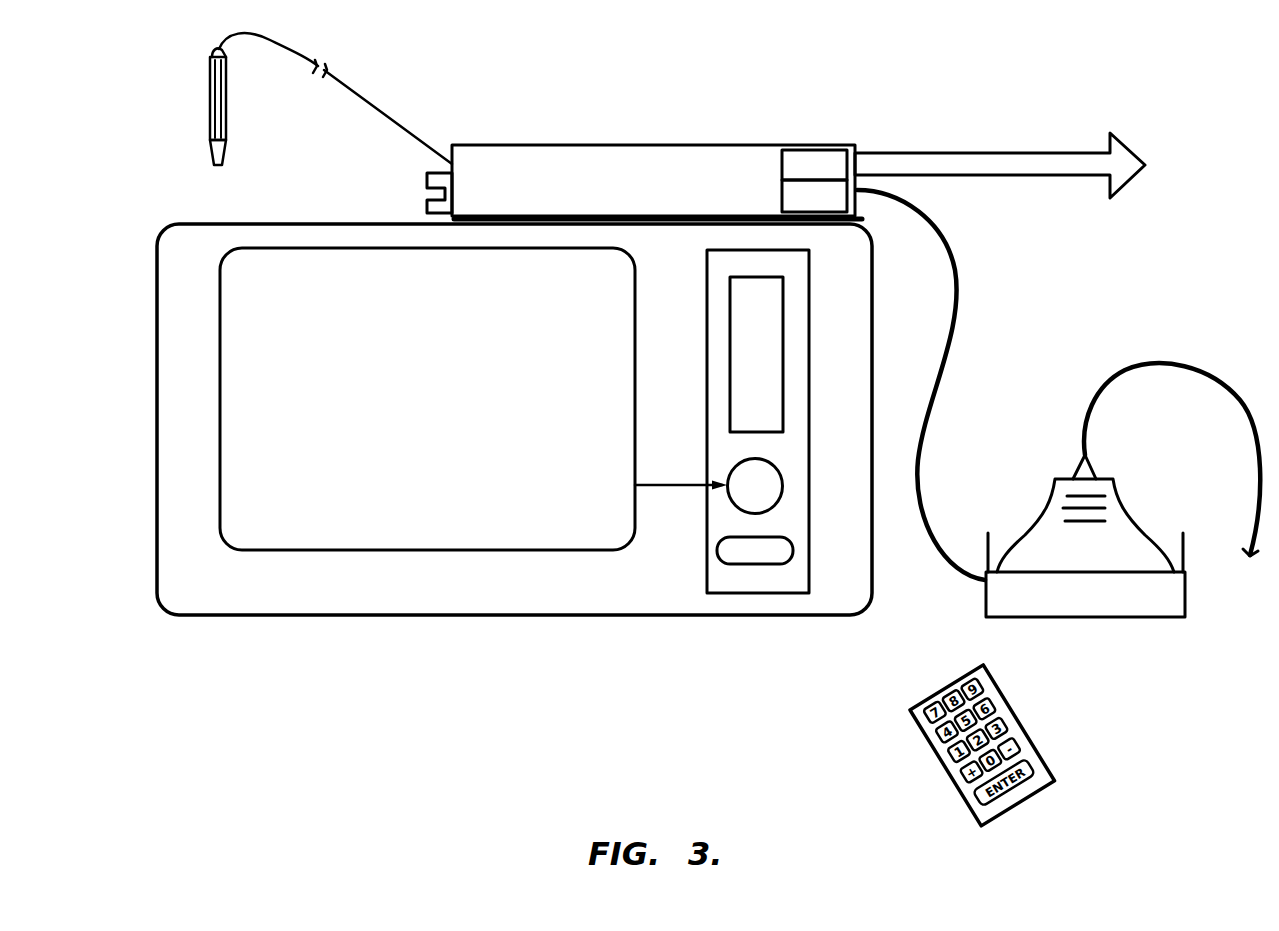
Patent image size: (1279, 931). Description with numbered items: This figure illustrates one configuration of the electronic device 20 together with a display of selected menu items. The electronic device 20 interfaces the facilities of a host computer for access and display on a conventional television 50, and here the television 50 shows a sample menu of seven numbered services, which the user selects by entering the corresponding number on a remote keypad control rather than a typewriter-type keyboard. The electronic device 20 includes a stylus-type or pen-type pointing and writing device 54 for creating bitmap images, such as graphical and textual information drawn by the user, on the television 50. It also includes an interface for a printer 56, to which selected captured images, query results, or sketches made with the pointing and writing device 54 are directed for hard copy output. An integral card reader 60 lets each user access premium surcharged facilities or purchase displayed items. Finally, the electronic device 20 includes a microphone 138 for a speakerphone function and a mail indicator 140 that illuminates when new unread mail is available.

The electronic device 20 is at (632, 146).
The television 50 is at (157, 394).
The pointing and writing device 54 is at (210, 110).
The printer 56 is at (1132, 512).
The card reader 60 is at (427, 190).
The microphone 138 is at (783, 164).
The mail indicator 140 is at (783, 200).